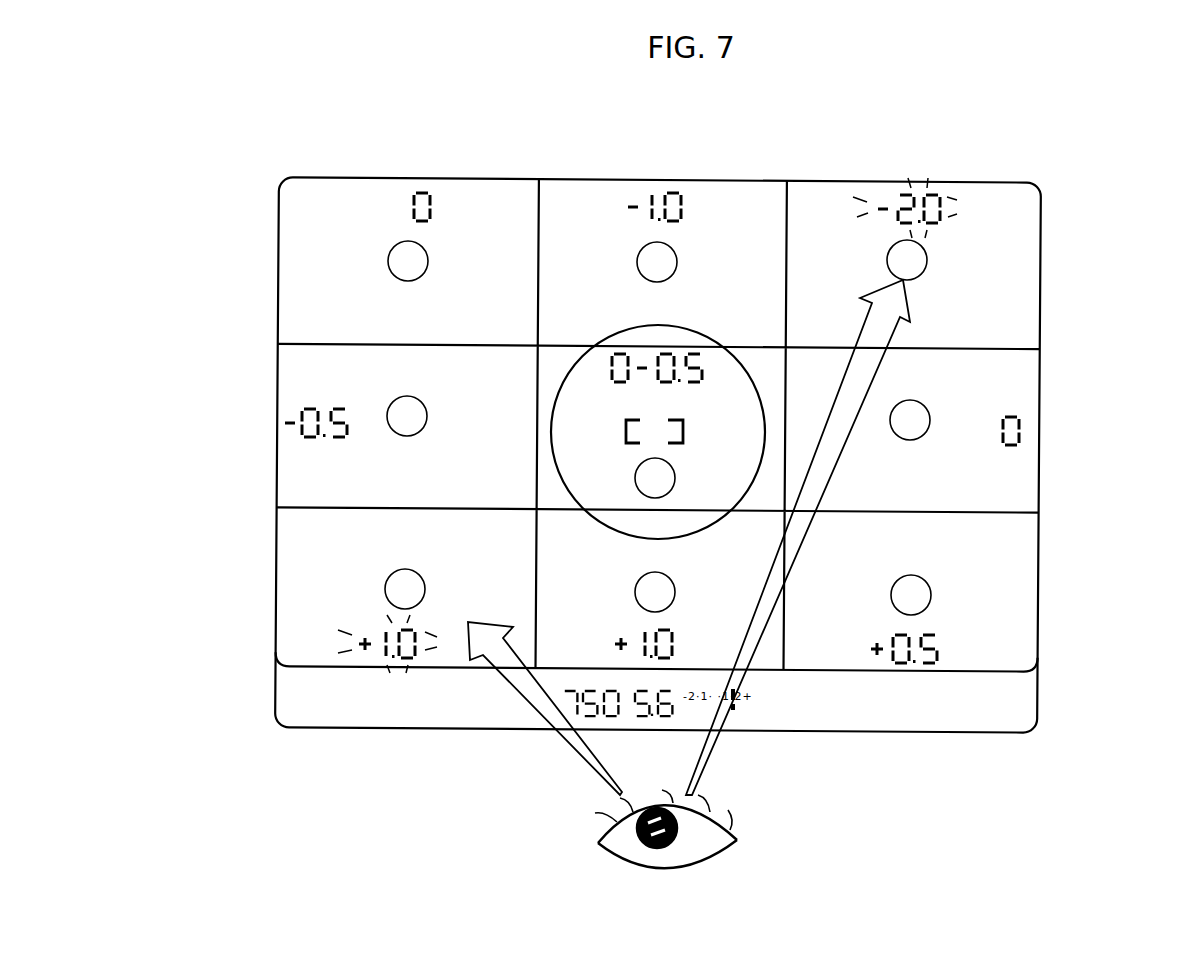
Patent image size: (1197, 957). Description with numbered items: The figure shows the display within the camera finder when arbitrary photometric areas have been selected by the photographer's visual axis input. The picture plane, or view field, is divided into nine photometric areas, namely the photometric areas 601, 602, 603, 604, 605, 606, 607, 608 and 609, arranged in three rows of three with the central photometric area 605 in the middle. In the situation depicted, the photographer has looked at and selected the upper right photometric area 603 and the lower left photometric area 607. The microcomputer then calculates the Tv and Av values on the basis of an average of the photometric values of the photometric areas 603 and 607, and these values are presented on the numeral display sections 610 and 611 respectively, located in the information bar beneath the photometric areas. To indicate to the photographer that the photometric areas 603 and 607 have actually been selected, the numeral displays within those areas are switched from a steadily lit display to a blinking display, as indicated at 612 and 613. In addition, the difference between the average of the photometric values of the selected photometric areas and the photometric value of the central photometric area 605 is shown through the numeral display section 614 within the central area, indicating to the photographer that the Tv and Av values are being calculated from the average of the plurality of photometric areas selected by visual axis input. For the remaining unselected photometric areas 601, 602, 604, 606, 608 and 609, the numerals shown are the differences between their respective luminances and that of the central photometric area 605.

The photometric area 601 is at (462, 190).
The photometric area 602 is at (563, 192).
The upper right photometric area 603 is at (842, 197).
The photometric area 604 is at (292, 377).
The central photometric area 605 is at (554, 363).
The photometric area 606 is at (1022, 388).
The lower left photometric area 607 is at (292, 602).
The photometric area 608 is at (565, 543).
The photometric area 609 is at (1020, 597).
The numeral display section 610 is at (598, 738).
The numeral display section 611 is at (650, 738).
The blinking display 612 is at (957, 203).
The blinking display 613 is at (370, 657).
The numeral display section 614 is at (710, 363).